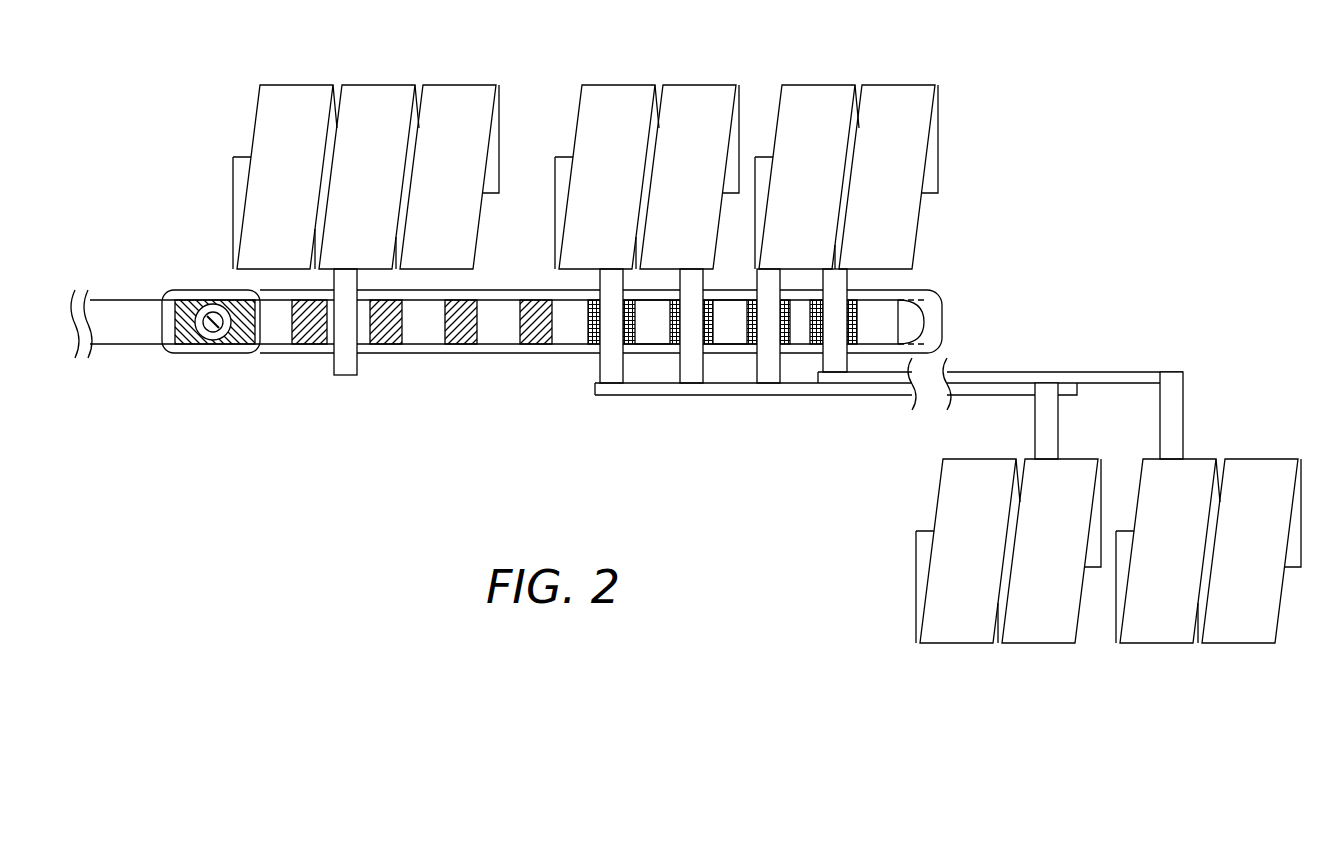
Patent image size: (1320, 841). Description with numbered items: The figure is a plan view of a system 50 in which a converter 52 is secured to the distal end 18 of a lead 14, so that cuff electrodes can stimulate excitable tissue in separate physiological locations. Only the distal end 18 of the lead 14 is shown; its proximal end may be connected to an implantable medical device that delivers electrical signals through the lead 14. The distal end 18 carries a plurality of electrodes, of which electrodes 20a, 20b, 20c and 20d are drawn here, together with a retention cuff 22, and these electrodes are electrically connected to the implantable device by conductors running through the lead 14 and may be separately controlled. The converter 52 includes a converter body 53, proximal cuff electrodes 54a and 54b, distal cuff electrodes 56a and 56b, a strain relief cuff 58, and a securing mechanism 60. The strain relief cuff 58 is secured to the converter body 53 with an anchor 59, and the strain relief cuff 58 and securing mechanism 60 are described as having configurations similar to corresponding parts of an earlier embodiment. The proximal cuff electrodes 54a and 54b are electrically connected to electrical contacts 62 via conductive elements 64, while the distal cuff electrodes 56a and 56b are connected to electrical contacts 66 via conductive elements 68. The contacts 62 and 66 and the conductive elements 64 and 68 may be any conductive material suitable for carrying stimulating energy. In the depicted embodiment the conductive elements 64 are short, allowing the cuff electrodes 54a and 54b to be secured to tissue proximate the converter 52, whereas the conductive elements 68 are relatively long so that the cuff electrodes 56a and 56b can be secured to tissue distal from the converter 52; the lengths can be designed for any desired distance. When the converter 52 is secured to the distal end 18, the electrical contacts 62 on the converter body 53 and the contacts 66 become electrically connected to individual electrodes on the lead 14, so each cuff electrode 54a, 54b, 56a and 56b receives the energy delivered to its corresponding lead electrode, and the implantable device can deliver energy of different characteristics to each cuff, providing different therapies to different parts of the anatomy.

The lead 14 is at (125, 342).
The distal end 18 is at (922, 322).
The electrode 20a is at (320, 346).
The electrode 20b is at (373, 346).
The electrode 20c is at (460, 346).
The electrode 20d is at (527, 346).
The retention cuff 22 is at (240, 343).
The system 50 is at (1087, 157).
The converter 52 is at (202, 258).
The converter body 53 is at (443, 355).
The proximal cuff electrode 54a is at (689, 85).
The proximal cuff electrode 54b is at (898, 85).
The distal cuff electrode 56a is at (1043, 643).
The distal cuff electrode 56b is at (1170, 643).
The strain relief cuff 58 is at (373, 85).
The anchor 59 is at (353, 377).
The securing mechanism 60 is at (195, 357).
The electrical contacts 62 is at (663, 342).
The conductive elements 64 is at (692, 352).
The electrical contacts 66 is at (592, 302).
The conductive elements 68 is at (867, 376).